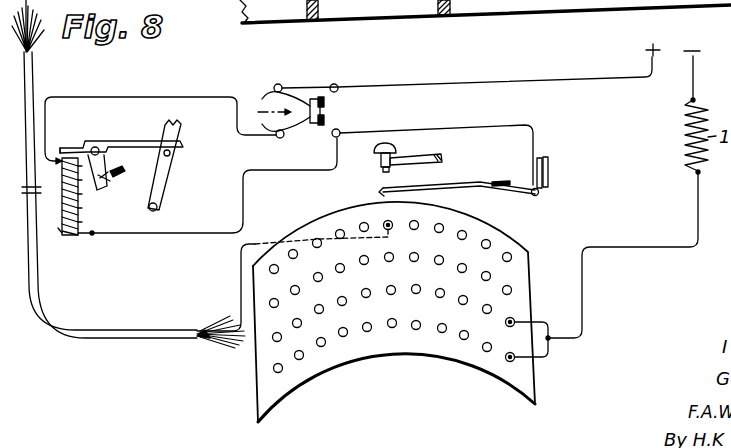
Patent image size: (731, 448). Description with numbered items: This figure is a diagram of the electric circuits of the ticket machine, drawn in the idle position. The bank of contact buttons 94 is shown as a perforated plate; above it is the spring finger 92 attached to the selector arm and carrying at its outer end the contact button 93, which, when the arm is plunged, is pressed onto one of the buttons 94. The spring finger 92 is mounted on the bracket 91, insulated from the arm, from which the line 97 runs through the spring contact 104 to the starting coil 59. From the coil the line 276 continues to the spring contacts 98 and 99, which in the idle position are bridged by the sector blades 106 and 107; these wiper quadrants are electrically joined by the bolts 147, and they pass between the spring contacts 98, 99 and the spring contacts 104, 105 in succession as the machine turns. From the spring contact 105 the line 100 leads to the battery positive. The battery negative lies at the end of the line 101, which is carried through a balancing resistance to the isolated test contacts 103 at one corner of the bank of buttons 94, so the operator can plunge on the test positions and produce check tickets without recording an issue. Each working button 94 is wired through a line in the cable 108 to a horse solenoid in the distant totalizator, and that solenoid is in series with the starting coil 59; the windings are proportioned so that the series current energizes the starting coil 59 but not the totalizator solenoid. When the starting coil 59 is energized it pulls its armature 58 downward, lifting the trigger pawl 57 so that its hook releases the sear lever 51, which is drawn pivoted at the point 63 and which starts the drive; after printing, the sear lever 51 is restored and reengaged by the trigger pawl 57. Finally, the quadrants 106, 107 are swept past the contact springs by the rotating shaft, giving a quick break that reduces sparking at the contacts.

The line 276 is at (170, 92).
The armature 58 is at (70, 147).
The trigger pawl 57 is at (130, 142).
The sear lever 51 is at (168, 180).
The pivot 63 is at (160, 206).
The starting coil 59 is at (80, 210).
The cable 108 is at (39, 283).
The sector blade 107 is at (271, 89).
The spring contact 99 is at (284, 87).
The spring contact 105 is at (339, 86).
The bolts 147 is at (326, 101).
The spring contact 104 is at (341, 129).
The spring contact 98 is at (271, 146).
The sector blade 106 is at (299, 135).
The line 97 is at (483, 122).
The line 100 is at (585, 79).
The spring finger 92 is at (483, 182).
The bracket 91 is at (507, 193).
The contact button 93 is at (380, 192).
The contact buttons 94 is at (394, 312).
The test contacts 103 is at (515, 314).
The line 101 is at (647, 242).